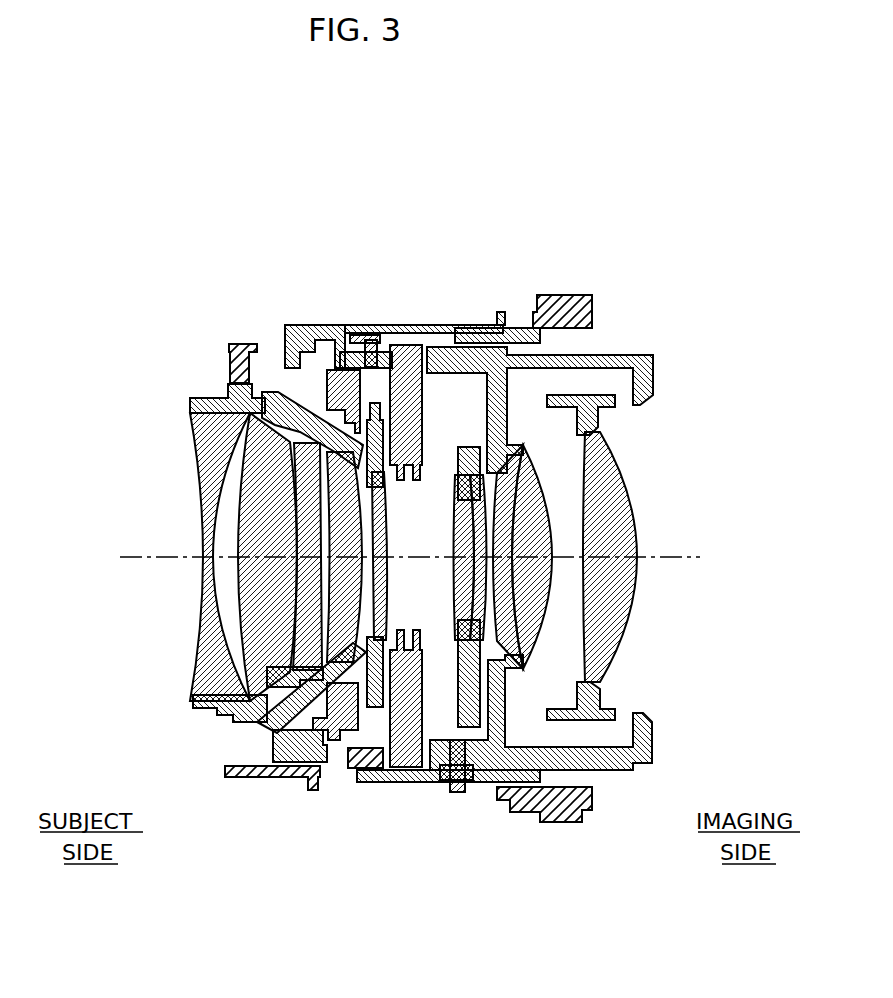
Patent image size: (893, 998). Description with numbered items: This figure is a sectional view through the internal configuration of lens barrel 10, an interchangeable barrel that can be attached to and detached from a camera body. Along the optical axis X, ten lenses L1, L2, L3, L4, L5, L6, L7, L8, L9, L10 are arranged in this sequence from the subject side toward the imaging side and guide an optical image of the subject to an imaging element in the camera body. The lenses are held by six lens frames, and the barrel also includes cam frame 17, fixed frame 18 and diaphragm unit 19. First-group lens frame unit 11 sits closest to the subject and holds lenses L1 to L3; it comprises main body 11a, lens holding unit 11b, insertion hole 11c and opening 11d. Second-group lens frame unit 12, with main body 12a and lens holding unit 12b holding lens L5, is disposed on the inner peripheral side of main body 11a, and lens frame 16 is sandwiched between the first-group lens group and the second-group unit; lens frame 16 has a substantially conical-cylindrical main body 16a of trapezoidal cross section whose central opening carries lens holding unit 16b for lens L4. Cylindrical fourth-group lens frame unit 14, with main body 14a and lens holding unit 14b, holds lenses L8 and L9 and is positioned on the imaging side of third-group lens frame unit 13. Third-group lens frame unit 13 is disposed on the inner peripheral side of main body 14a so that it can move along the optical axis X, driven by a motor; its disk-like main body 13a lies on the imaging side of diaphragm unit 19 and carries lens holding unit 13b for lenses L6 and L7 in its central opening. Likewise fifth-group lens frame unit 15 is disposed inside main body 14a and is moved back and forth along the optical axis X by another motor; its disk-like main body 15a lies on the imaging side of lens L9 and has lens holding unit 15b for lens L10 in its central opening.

The lens barrel 10 is at (165, 252).
The first-group lens frame unit 11 is at (200, 354).
The main body 11a is at (324, 757).
The lens holding unit 11b is at (262, 675).
The insertion hole 11c is at (256, 334).
The opening 11d is at (252, 744).
The second-group lens frame unit 12 is at (368, 714).
The main body 12a is at (382, 424).
The lens holding unit 12b is at (398, 474).
The third-group lens frame unit 13 is at (466, 446).
The main body 13a is at (472, 703).
The lens holding unit 13b is at (455, 624).
The fourth-group lens frame unit 14 is at (515, 352).
The main body 14a is at (460, 350).
The lens holding unit 14b is at (528, 452).
The fifth-group lens frame unit 15 is at (601, 390).
The main body 15a is at (615, 402).
The lens holding unit 15b is at (592, 697).
The lens frame 16 is at (276, 392).
The main body 16a is at (285, 393).
The lens holding unit 16b is at (351, 378).
The cam frame 17 is at (412, 782).
The fixed frame 18 is at (232, 344).
The diaphragm unit 19 is at (424, 781).
The lens L1 is at (207, 524).
The lens L2 is at (262, 512).
The lens L3 is at (300, 490).
The lens L4 is at (345, 582).
The lens L5 is at (385, 547).
The lens L6 is at (503, 612).
The lens L7 is at (462, 590).
The lens L8 is at (505, 549).
The lens L9 is at (538, 523).
The lens L10 is at (602, 458).
The optical axis X is at (122, 557).